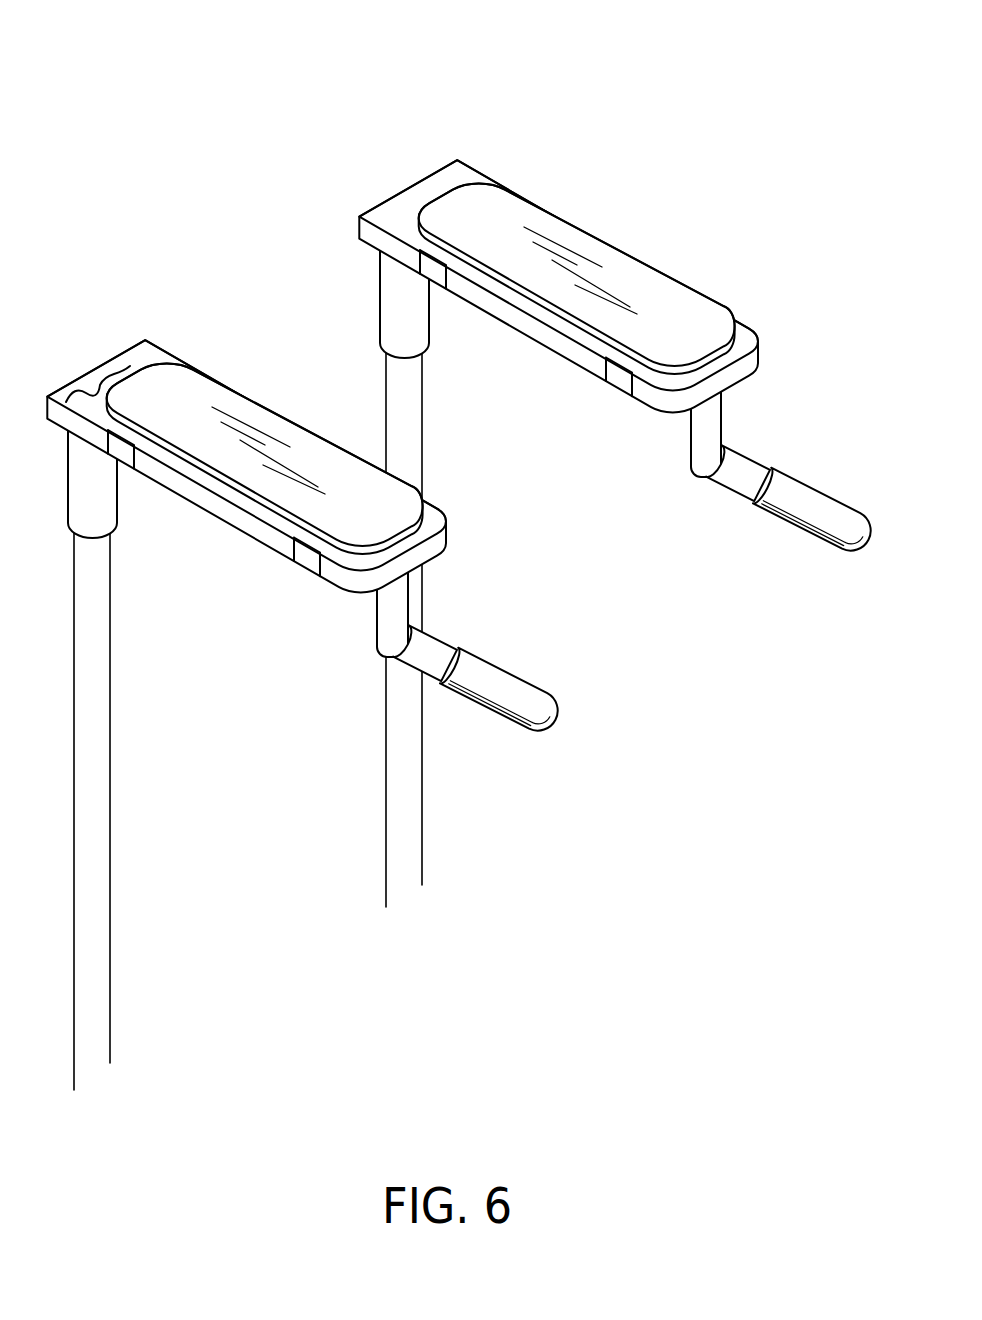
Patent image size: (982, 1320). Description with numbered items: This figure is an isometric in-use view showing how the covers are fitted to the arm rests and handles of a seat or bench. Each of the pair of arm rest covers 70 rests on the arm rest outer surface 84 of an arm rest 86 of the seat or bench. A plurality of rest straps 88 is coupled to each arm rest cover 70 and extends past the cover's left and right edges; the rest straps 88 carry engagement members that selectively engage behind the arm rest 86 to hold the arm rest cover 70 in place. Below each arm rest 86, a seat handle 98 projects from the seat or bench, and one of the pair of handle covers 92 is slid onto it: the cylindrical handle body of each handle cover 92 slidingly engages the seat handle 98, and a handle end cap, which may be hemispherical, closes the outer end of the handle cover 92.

The arm rest cover 70 is at (365, 502).
The arm rest outer surface 84 is at (95, 386).
The arm rest 86 is at (132, 362).
The rest straps 88 is at (135, 467).
The handle covers 92 is at (852, 538).
The seat handle 98 is at (432, 643).